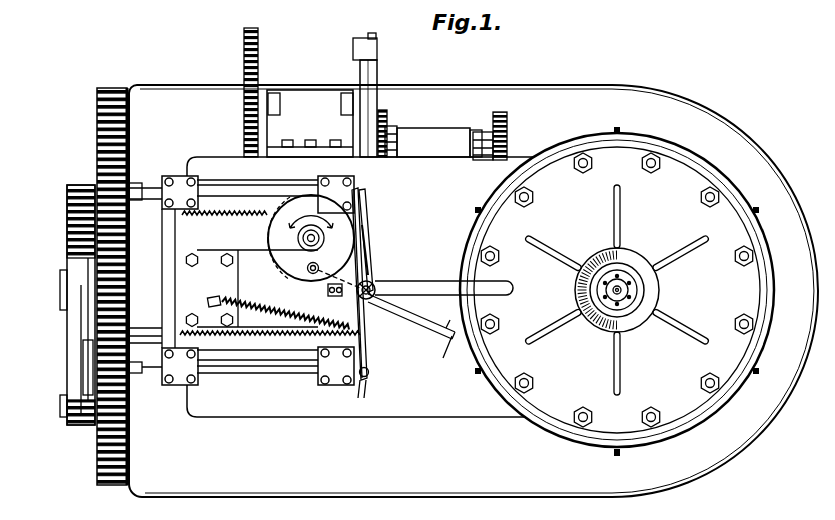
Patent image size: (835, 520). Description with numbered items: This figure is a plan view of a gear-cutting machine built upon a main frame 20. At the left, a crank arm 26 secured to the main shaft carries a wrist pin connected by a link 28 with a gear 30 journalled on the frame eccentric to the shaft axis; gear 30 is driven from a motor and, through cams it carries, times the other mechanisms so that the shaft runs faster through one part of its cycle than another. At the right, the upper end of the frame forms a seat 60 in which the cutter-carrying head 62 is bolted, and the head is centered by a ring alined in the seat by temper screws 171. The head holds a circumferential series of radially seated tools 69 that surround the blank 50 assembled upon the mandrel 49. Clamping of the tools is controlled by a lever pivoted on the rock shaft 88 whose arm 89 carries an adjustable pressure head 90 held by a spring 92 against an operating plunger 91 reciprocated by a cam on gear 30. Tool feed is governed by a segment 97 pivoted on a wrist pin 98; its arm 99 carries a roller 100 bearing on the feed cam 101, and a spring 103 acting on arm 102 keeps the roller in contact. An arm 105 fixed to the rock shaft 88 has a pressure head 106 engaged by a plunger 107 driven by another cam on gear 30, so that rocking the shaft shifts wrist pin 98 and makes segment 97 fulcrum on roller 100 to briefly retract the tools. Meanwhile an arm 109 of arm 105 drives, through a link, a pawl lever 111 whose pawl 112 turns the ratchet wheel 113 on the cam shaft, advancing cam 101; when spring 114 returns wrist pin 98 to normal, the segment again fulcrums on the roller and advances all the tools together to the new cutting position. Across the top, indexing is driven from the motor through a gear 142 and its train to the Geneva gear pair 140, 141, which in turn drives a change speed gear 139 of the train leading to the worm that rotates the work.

The main frame 20 is at (603, 85).
The crank arm 26 is at (78, 428).
The link 28 is at (88, 378).
The gear 30 is at (112, 88).
The mandrel 49 is at (624, 283).
The blank 50 is at (632, 290).
The seat 60 is at (722, 176).
The cutter-carrying head 62 is at (672, 168).
The tool 69 is at (633, 301).
The rock shaft 88 is at (398, 283).
The arm 89 is at (366, 217).
The adjustable pressure head 90 is at (364, 196).
The operating plunger 91 is at (255, 192).
The spring 92 is at (248, 222).
The segment 97 is at (451, 348).
The wrist pin 98 is at (372, 282).
The arm 99 is at (320, 292).
The roller 100 is at (316, 270).
The feed cam 101 is at (298, 258).
The arm 102 is at (368, 330).
The spring 103 is at (226, 302).
The arm 105 is at (378, 362).
The pressure head 106 is at (363, 378).
The plunger 107 is at (278, 373).
The arm 109 is at (342, 298).
The pawl lever 111 is at (370, 226).
The pawl 112 is at (362, 246).
The ratchet wheel 113 is at (282, 256).
The spring 114 is at (272, 341).
The change speed gear 139 is at (503, 110).
The Geneva gear 140 is at (388, 114).
The Geneva gear 141 is at (378, 75).
The gear 142 is at (258, 72).
The temper screw 171 is at (762, 205).